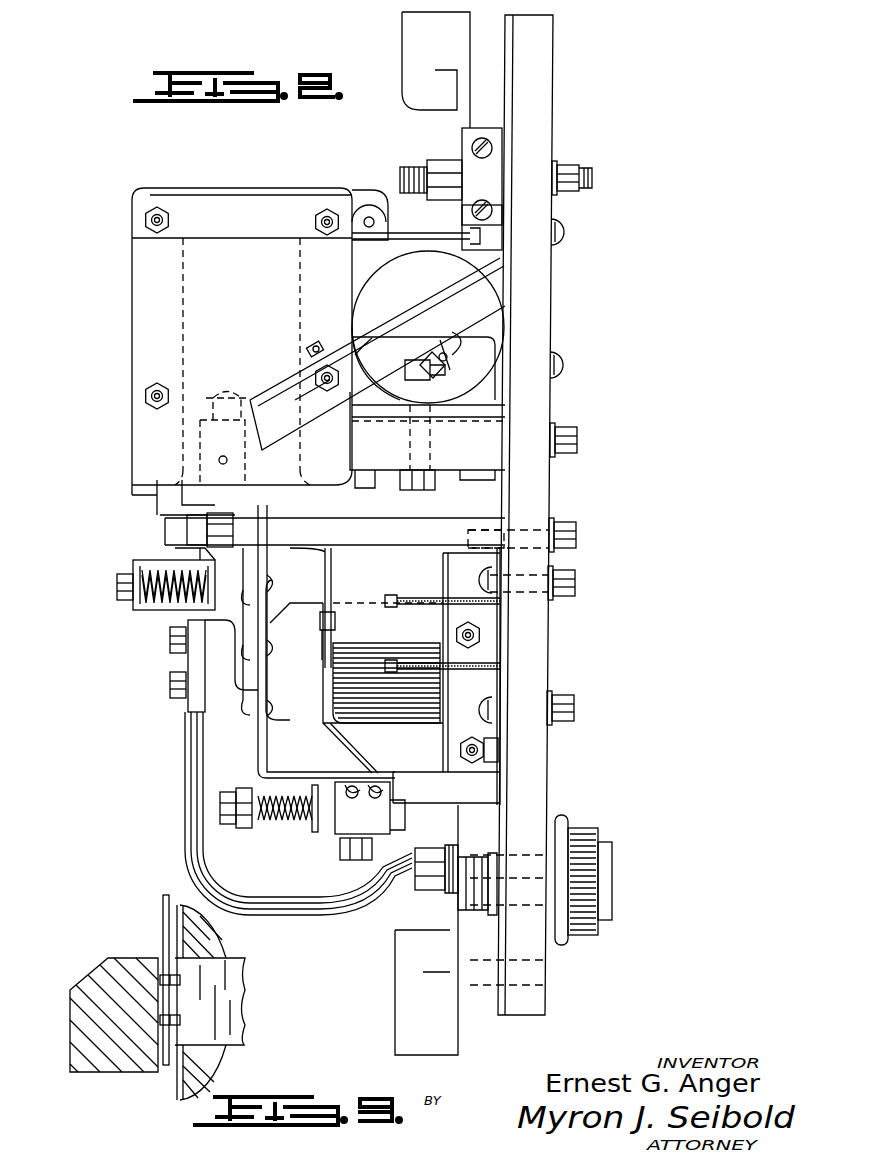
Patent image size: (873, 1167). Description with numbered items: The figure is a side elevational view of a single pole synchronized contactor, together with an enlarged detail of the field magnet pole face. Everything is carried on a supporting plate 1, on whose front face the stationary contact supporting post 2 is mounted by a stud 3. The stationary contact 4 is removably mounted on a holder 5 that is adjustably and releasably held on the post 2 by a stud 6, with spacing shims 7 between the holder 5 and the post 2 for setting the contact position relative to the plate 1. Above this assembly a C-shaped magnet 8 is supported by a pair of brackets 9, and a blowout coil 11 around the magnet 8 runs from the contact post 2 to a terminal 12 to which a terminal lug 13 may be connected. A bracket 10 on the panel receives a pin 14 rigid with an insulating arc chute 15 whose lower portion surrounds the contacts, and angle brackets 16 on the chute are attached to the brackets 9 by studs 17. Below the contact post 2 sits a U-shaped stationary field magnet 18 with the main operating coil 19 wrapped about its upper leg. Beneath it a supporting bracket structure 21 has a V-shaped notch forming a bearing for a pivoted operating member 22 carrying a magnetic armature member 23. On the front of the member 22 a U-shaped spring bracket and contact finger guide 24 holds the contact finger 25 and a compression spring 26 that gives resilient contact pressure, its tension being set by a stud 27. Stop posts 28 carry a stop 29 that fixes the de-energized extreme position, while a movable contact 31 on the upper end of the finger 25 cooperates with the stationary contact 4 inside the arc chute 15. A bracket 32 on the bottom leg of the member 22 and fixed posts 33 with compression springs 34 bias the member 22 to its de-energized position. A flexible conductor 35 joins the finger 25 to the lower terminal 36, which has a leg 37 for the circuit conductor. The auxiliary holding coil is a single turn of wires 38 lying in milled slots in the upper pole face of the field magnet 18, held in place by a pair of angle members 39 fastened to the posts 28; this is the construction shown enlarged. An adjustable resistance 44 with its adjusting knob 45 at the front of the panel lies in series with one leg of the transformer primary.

In FIG. 2, the supporting plate 1 is at (540, 300).
In FIG. 2, the stationary contact supporting post 2 is at (495, 465).
In FIG. 2, the stud 3 is at (577, 444).
In FIG. 2, the stationary contact 4 is at (335, 520).
In FIG. 2, the holder 5 is at (358, 478).
In FIG. 2, the stud 6 is at (414, 490).
In FIG. 2, the spacing shims 7 is at (392, 474).
In FIG. 2, the C-shaped magnet 8 is at (394, 330).
In FIG. 2, the brackets 9 is at (460, 282).
In FIG. 2, the bracket 10 is at (438, 236).
In FIG. 2, the blowout coil 11 is at (397, 265).
In FIG. 2, the terminal 12 is at (496, 171).
In FIG. 2, the terminal lug 13 is at (430, 100).
In FIG. 2, the pin 14 is at (371, 212).
In FIG. 2, the insulating arc chute 15 is at (132, 333).
In FIG. 2, the angle brackets 16 is at (312, 366).
In FIG. 2, the studs 17 is at (308, 342).
In FIG. 2, the U-shaped stationary field magnet 18 is at (403, 770).
In FIG. 3, the U-shaped stationary field magnet 18 is at (240, 1022).
In FIG. 2, the main operating coil 19 is at (340, 698).
In FIG. 3, the main operating coil 19 is at (212, 942).
In FIG. 2, the supporting bracket structure 21 is at (358, 850).
In FIG. 2, the pivoted operating member 22 is at (258, 764).
In FIG. 2, the magnetic armature member 23 is at (275, 732).
In FIG. 3, the magnetic armature member 23 is at (88, 1018).
In FIG. 2, the spring bracket and contact finger guide 24 is at (162, 612).
In FIG. 2, the contact finger 25 is at (205, 655).
In FIG. 2, the compression spring 26 is at (160, 556).
In FIG. 2, the stud 27 is at (116, 586).
In FIG. 2, the stop posts 28 is at (190, 531).
In FIG. 2, the stop 29 is at (165, 516).
In FIG. 2, the movable contact 31 is at (205, 440).
In FIG. 2, the bracket 32 is at (314, 832).
In FIG. 2, the fixed posts 33 is at (268, 826).
In FIG. 2, the compression springs 34 is at (283, 825).
In FIG. 2, the flexible conductor 35 is at (192, 790).
In FIG. 2, the lower terminal 36 is at (468, 905).
In FIG. 2, the leg 37 is at (410, 985).
In FIG. 2, the wires 38 is at (335, 650).
In FIG. 3, the wires 38 is at (180, 1000).
In FIG. 2, the angle members 39 is at (333, 572).
In FIG. 3, the angle members 39 is at (163, 921).
In FIG. 2, the adjustable resistance 44 is at (590, 822).
In FIG. 2, the adjusting knob 45 is at (458, 890).